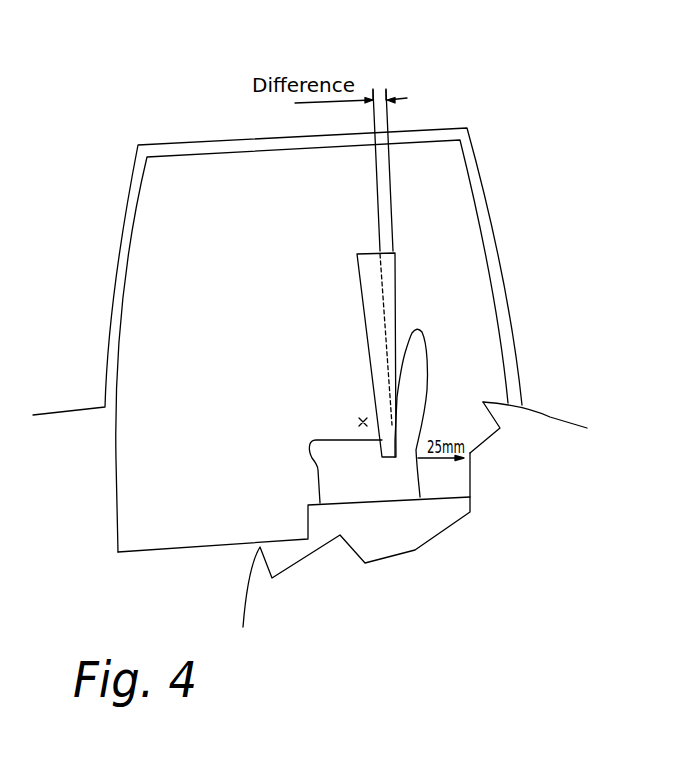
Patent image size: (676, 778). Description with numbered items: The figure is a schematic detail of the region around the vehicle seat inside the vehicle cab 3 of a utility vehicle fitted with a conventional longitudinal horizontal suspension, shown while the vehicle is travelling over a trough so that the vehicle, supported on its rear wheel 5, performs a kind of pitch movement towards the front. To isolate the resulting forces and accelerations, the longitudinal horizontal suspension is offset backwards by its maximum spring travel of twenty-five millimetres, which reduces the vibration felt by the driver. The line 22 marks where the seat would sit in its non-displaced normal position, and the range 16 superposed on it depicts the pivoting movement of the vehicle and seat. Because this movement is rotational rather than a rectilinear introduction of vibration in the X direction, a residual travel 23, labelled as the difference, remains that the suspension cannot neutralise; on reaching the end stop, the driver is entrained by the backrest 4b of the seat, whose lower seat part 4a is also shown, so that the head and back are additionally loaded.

The vehicle cab 3 is at (503, 297).
The first seal part 4a is at (347, 448).
The backrest 4b is at (419, 378).
The rear wheel 5 is at (558, 442).
The range 16 is at (357, 254).
The line 22 is at (383, 287).
The residual travel 23 is at (374, 90).